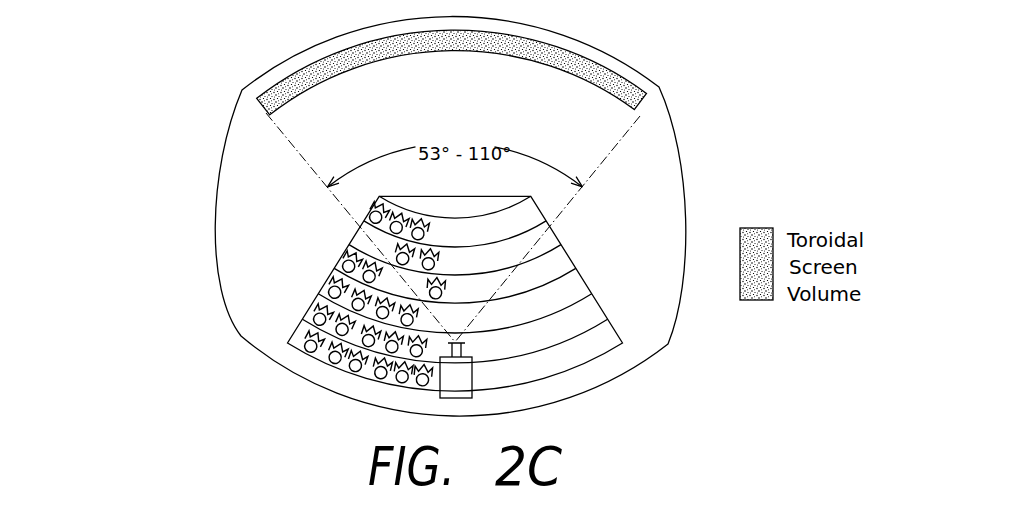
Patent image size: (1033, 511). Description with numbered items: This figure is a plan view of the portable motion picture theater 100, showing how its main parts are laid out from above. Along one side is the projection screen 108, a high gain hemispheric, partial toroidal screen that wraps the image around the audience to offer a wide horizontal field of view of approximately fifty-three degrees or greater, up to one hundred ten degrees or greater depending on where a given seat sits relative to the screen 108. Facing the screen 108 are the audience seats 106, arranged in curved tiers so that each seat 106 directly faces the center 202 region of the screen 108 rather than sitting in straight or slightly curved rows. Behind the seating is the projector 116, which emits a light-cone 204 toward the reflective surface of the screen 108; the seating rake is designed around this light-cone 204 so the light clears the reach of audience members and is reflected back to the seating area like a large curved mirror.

The portable motion picture theater 100 is at (160, 62).
The projection screen 108 is at (598, 70).
The center of the screen 202 is at (458, 53).
The light-cone 204 is at (612, 147).
The audience seats 106 is at (316, 303).
The projector 116 is at (472, 375).